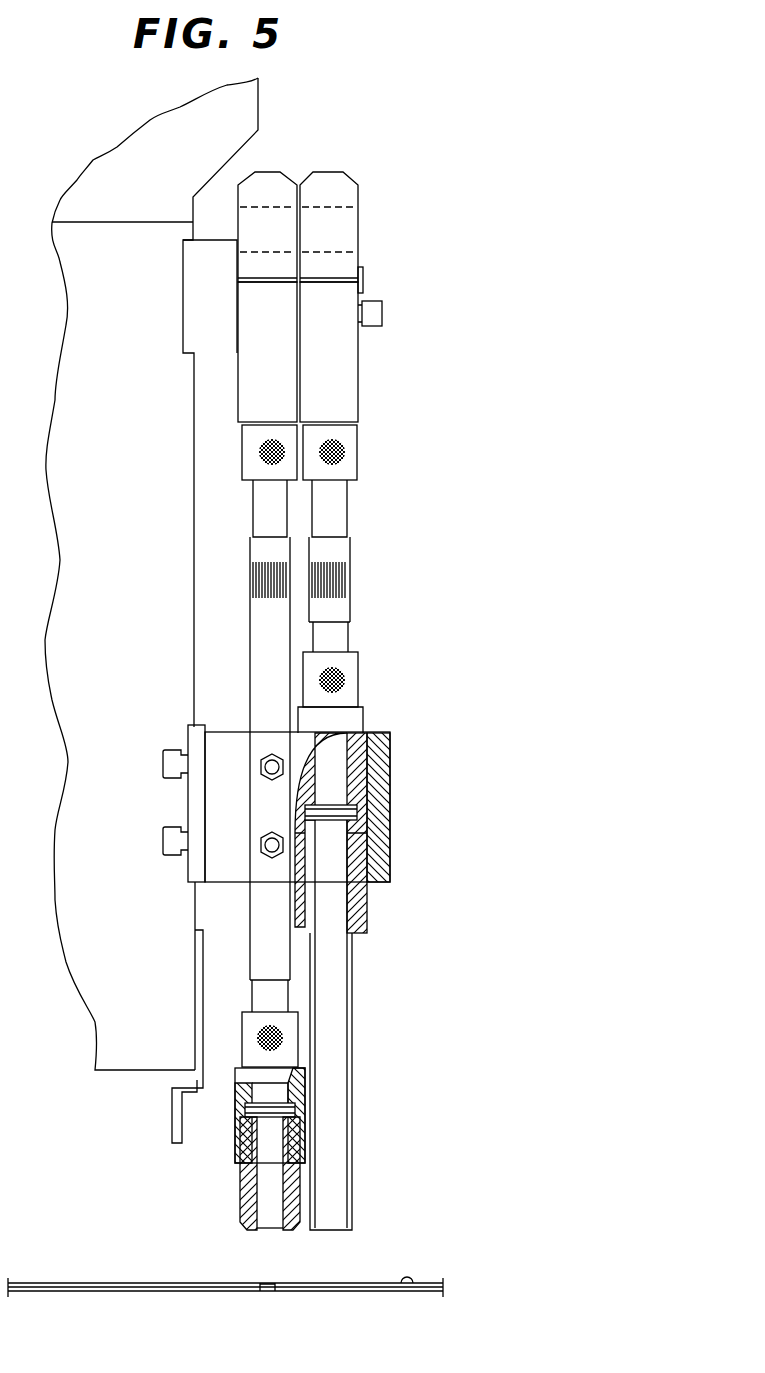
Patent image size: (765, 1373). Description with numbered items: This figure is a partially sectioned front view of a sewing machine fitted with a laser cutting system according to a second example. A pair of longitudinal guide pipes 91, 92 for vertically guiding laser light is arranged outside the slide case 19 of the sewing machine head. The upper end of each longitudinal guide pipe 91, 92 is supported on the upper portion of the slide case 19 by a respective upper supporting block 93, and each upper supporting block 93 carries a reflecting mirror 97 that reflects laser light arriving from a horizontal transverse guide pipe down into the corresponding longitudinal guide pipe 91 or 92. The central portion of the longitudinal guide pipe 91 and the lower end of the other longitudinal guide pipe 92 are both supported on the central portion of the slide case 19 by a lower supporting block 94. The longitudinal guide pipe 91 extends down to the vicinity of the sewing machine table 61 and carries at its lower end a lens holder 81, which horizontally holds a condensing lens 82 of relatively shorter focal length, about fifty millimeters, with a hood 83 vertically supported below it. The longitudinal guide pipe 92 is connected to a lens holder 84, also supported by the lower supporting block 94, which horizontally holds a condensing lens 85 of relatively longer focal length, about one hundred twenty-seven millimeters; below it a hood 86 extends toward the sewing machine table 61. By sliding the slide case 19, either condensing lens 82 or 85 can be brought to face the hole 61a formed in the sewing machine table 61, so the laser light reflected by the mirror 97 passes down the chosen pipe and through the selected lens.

The slide case 19 is at (135, 1065).
The reflecting mirror 97 is at (254, 232).
The upper supporting block 93 is at (348, 373).
The longitudinal guide pipe 91 is at (258, 637).
The longitudinal guide pipe 92 is at (343, 608).
The lower supporting block 94 is at (380, 875).
The lens holder 84 is at (367, 760).
The condensing lens 85 is at (330, 808).
The hood 86 is at (338, 1087).
The lens holder 81 is at (235, 1090).
The condensing lens 82 is at (268, 1110).
The hood 83 is at (245, 1213).
The sewing machine table 61 is at (410, 1285).
The hole 61a is at (265, 1292).